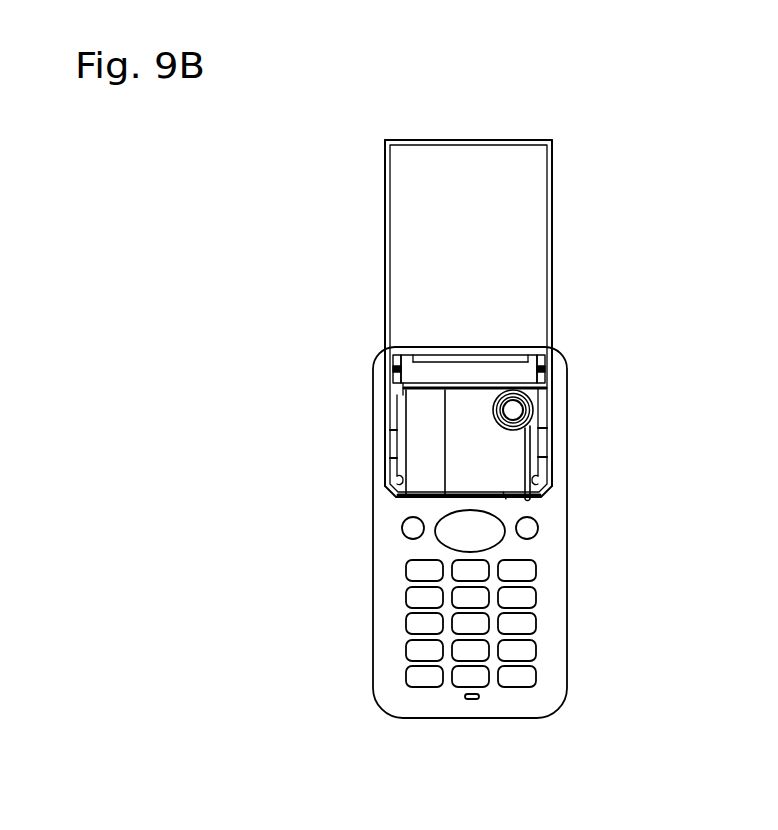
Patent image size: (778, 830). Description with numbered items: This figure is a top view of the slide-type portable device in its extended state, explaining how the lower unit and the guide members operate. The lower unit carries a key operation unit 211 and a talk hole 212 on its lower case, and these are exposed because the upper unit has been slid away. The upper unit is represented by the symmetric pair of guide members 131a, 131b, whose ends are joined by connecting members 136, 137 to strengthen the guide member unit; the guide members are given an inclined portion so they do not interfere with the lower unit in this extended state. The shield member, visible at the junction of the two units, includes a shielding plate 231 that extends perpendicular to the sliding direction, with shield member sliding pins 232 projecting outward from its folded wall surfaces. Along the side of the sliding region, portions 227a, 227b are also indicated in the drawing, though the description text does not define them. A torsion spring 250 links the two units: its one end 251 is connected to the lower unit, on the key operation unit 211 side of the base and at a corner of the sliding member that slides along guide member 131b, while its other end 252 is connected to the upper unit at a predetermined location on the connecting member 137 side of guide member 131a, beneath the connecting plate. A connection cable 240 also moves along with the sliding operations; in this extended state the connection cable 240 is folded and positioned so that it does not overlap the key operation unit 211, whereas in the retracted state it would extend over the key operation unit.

The connecting member 136 is at (484, 140).
The guide member 131a is at (385, 220).
The guide member 131b is at (552, 196).
The other end of torsion spring 252 is at (392, 394).
The shield member sliding pin 232 is at (550, 373).
The shielding plate 231 is at (467, 375).
The second engaging portion 227b is at (557, 428).
The first engaging portion 227a is at (557, 457).
The torsion spring 250 is at (500, 430).
The one end of torsion spring 251 is at (505, 497).
The connecting member 137 is at (535, 498).
The connection cable 240 is at (413, 448).
The key operation unit 211 is at (522, 674).
The talk hole 212 is at (469, 702).